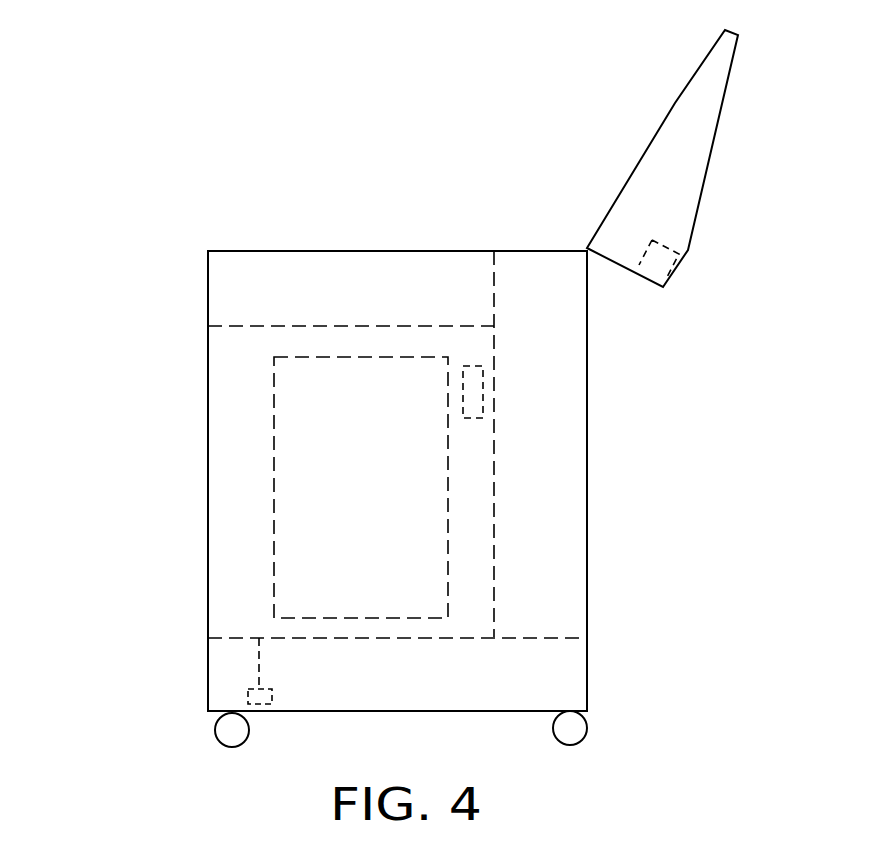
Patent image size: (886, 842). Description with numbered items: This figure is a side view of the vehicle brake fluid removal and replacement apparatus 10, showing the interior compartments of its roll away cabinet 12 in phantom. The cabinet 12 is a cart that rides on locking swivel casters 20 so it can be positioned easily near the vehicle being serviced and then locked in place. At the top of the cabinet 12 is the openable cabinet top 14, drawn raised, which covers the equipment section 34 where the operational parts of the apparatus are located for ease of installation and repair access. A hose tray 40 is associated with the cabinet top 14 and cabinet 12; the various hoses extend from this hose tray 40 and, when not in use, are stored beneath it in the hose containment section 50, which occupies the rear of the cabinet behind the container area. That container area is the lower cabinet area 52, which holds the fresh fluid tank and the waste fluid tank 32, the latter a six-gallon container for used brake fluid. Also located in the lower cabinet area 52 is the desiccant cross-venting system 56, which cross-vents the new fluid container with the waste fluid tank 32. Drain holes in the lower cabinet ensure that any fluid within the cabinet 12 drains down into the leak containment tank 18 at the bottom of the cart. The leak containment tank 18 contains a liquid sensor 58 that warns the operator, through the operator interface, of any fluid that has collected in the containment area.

The vehicle brake fluid removal and replacement apparatus 10 is at (92, 293).
The roll away cabinet 12 is at (590, 537).
The openable cabinet top 14 is at (678, 203).
The leak containment tank 18 is at (387, 678).
The locking swivel casters 20 is at (250, 728).
The waste fluid tank 32 is at (307, 440).
The equipment section 34 is at (247, 278).
The hose tray 40 is at (677, 265).
The hose containment section 50 is at (560, 468).
The lower cabinet area 52 is at (223, 515).
The desiccant cross-venting system 56 is at (473, 390).
The liquid sensor 58 is at (258, 677).